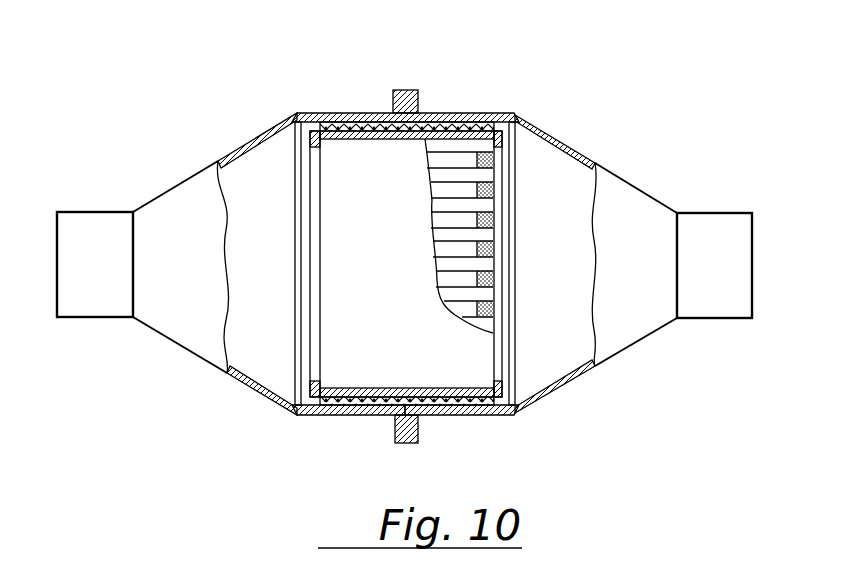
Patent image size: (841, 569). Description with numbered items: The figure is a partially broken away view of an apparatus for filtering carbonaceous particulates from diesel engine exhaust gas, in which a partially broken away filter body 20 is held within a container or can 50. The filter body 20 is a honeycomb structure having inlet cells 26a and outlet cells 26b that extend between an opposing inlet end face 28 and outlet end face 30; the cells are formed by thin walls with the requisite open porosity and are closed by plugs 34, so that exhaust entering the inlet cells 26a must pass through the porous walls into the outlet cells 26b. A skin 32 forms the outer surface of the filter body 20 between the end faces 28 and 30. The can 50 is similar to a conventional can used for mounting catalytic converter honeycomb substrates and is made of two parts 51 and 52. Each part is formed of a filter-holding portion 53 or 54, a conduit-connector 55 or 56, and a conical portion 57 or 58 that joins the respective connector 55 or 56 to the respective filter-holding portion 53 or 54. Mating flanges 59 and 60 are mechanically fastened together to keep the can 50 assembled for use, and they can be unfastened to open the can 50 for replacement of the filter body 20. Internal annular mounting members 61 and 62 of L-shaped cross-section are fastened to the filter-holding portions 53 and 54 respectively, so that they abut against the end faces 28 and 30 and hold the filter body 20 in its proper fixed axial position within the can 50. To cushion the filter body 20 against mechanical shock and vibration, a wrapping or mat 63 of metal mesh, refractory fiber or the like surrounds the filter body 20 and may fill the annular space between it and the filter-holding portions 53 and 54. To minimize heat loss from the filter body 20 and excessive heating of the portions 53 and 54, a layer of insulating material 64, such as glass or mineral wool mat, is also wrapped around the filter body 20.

The filter body 20 is at (345, 168).
The inlet cells 26a is at (437, 160).
The outlet cells 26b is at (450, 266).
The inlet end face 28 is at (301, 210).
The outlet end face 30 is at (512, 328).
The skin 32 is at (331, 258).
The plugs 34 is at (490, 220).
The can 50 is at (506, 102).
The first can part 51 is at (248, 118).
The second can part 52 is at (543, 118).
The filter-holding portion 53 is at (347, 413).
The filter-holding portion 54 is at (490, 413).
The conduit-connector 55 is at (87, 240).
The conduit-connector 56 is at (712, 237).
The conical portion 57 is at (167, 312).
The conical portion 58 is at (648, 315).
The mating flange 59 is at (393, 100).
The mating flange 60 is at (417, 112).
The internal annular mounting member 61 is at (303, 297).
The internal annular mounting member 62 is at (512, 262).
The wrapping or mat 63 is at (437, 412).
The layer of insulating material 64 is at (410, 388).